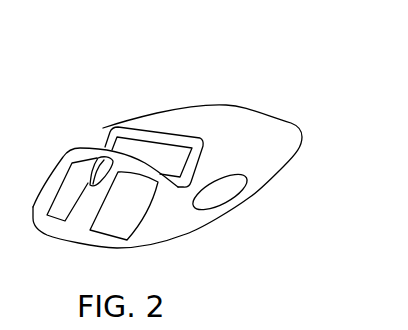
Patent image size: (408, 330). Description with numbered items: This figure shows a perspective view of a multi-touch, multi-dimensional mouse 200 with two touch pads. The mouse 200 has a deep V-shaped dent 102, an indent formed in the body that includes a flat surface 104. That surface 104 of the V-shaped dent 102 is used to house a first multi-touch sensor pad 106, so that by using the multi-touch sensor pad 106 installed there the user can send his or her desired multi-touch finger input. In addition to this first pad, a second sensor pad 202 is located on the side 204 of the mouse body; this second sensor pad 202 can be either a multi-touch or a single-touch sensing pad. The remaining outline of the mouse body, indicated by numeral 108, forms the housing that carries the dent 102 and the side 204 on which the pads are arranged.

The multi-touch, multi-dimensional mouse 200 is at (184, 161).
The housing 108 is at (276, 127).
The V-shaped dent 102 is at (119, 128).
The flat surface 104 is at (104, 148).
The multi-touch sensor pad 106 is at (140, 145).
The second sensor pad 202 is at (230, 190).
The side of mouse body 204 is at (163, 225).